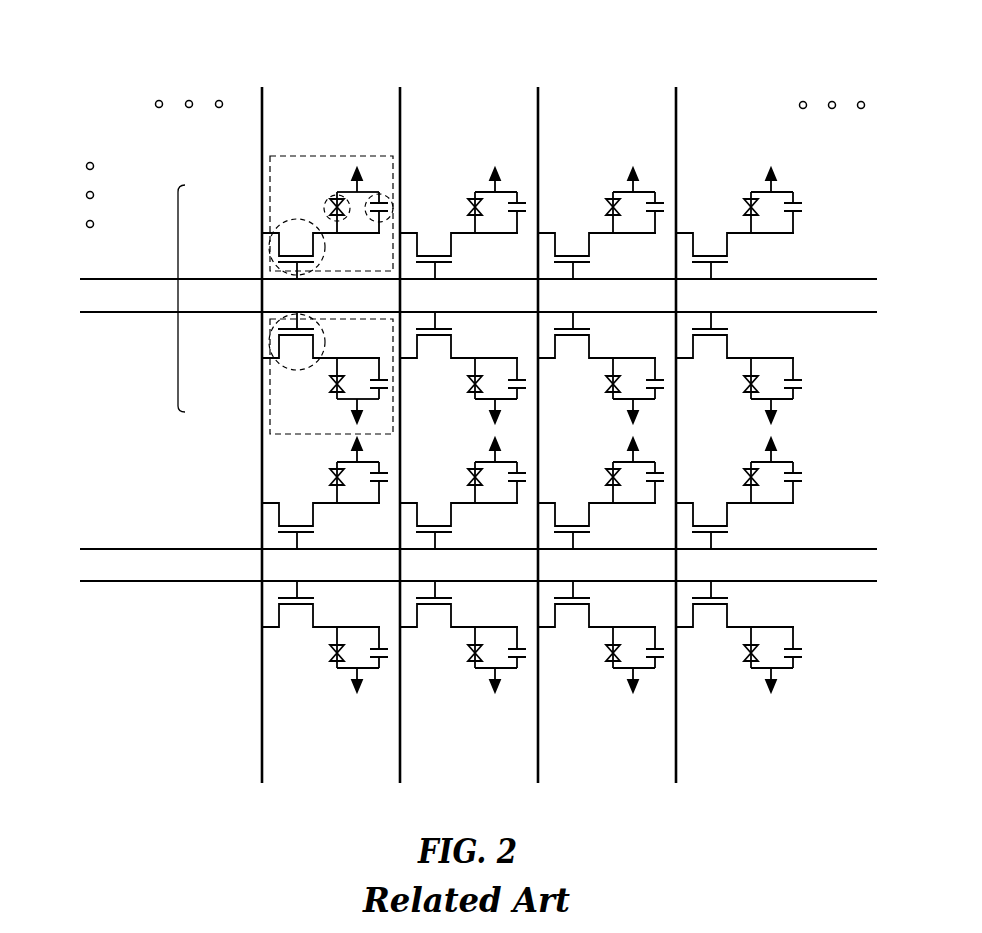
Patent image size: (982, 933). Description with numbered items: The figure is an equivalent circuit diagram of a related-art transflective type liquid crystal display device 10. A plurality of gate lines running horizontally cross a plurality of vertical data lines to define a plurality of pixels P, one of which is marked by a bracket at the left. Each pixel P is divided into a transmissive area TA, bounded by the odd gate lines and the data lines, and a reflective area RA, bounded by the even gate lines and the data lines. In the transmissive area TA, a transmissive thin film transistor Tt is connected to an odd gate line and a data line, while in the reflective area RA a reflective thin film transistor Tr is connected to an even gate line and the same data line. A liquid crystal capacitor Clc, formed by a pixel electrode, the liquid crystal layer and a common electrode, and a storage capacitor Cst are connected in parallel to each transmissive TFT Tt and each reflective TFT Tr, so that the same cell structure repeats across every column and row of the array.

The transflective type liquid crystal display device 10 is at (470, 41).
The transmissive area TA is at (270, 179).
The transmissive thin film transistor Tt is at (278, 226).
The liquid crystal capacitor Clc is at (328, 200).
The storage capacitor Cst is at (388, 197).
The reflective area RA is at (270, 402).
The reflective thin film transistor Tr is at (270, 358).
The pixel P is at (180, 302).